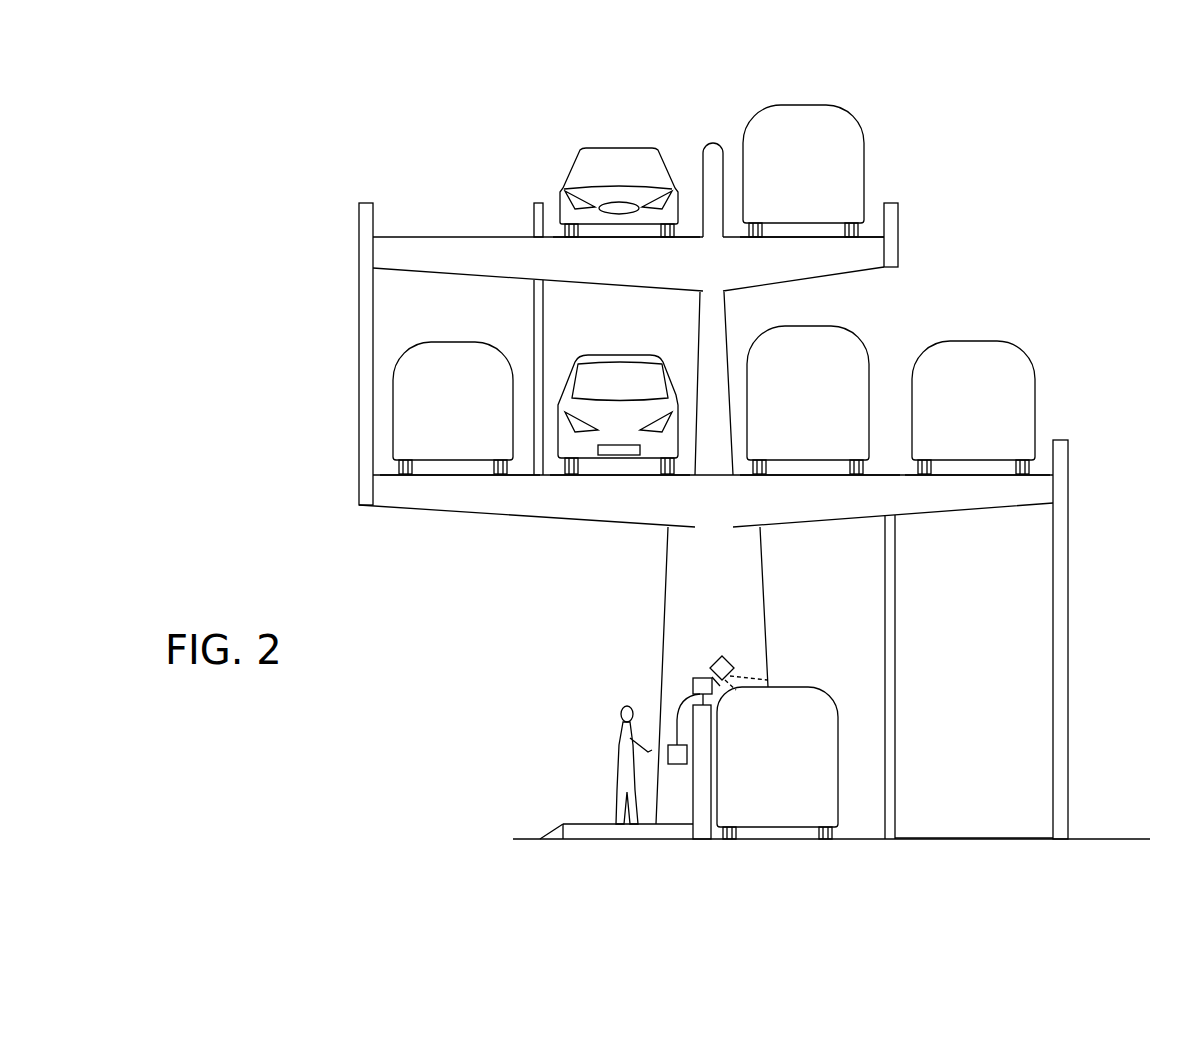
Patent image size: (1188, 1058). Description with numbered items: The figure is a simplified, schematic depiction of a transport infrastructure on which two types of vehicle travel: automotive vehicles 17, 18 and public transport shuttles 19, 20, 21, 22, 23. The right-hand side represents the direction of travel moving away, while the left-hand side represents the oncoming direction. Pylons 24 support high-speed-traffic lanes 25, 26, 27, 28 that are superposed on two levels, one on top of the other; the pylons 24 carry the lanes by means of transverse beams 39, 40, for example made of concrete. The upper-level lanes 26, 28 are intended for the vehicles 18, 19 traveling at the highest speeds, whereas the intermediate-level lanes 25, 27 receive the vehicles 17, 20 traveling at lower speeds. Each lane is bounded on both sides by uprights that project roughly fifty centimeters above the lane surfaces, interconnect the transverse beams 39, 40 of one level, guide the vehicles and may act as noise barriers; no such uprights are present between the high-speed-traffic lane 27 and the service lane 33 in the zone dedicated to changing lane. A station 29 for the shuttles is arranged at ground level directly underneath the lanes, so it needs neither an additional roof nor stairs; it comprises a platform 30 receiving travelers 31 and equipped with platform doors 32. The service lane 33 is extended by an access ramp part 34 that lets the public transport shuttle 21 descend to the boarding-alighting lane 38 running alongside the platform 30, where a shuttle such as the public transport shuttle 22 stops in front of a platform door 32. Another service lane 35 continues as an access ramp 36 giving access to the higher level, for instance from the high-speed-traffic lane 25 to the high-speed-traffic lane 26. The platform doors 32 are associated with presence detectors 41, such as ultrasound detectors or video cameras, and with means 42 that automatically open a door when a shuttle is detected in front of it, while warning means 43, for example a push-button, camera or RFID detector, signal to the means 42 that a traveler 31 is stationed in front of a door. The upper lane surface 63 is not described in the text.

The automotive vehicle 17 is at (598, 355).
The automotive vehicle 18 is at (610, 148).
The public transport shuttle 19 is at (830, 105).
The public transport shuttle 20 is at (866, 338).
The public transport shuttle 21 is at (1018, 347).
The public transport shuttle 22 is at (838, 773).
The public transport shuttle 23 is at (393, 412).
The pylon 24 is at (763, 620).
The high-speed-traffic lane 25 is at (622, 475).
The high-speed-traffic lane 26 is at (553, 228).
The high-speed-traffic lane 27 is at (810, 475).
The high-speed-traffic lane 28 is at (870, 230).
The station 29 is at (582, 822).
The platform 30 is at (600, 832).
The traveler 31 is at (613, 743).
The platform door 32 is at (703, 787).
The service lane 33 is at (985, 472).
The access ramp part 34 is at (1003, 627).
The service lane 35 is at (453, 475).
The access ramp 36 is at (442, 292).
The boarding-alighting lane 38 is at (783, 839).
The transverse beam 39 is at (1016, 508).
The transverse beam 40 is at (860, 273).
The presence detector 41 is at (715, 662).
The means for automatically controlling the platform doors 42 is at (693, 683).
The warning means 43 is at (668, 760).
The upper platform surface 63 is at (448, 236).